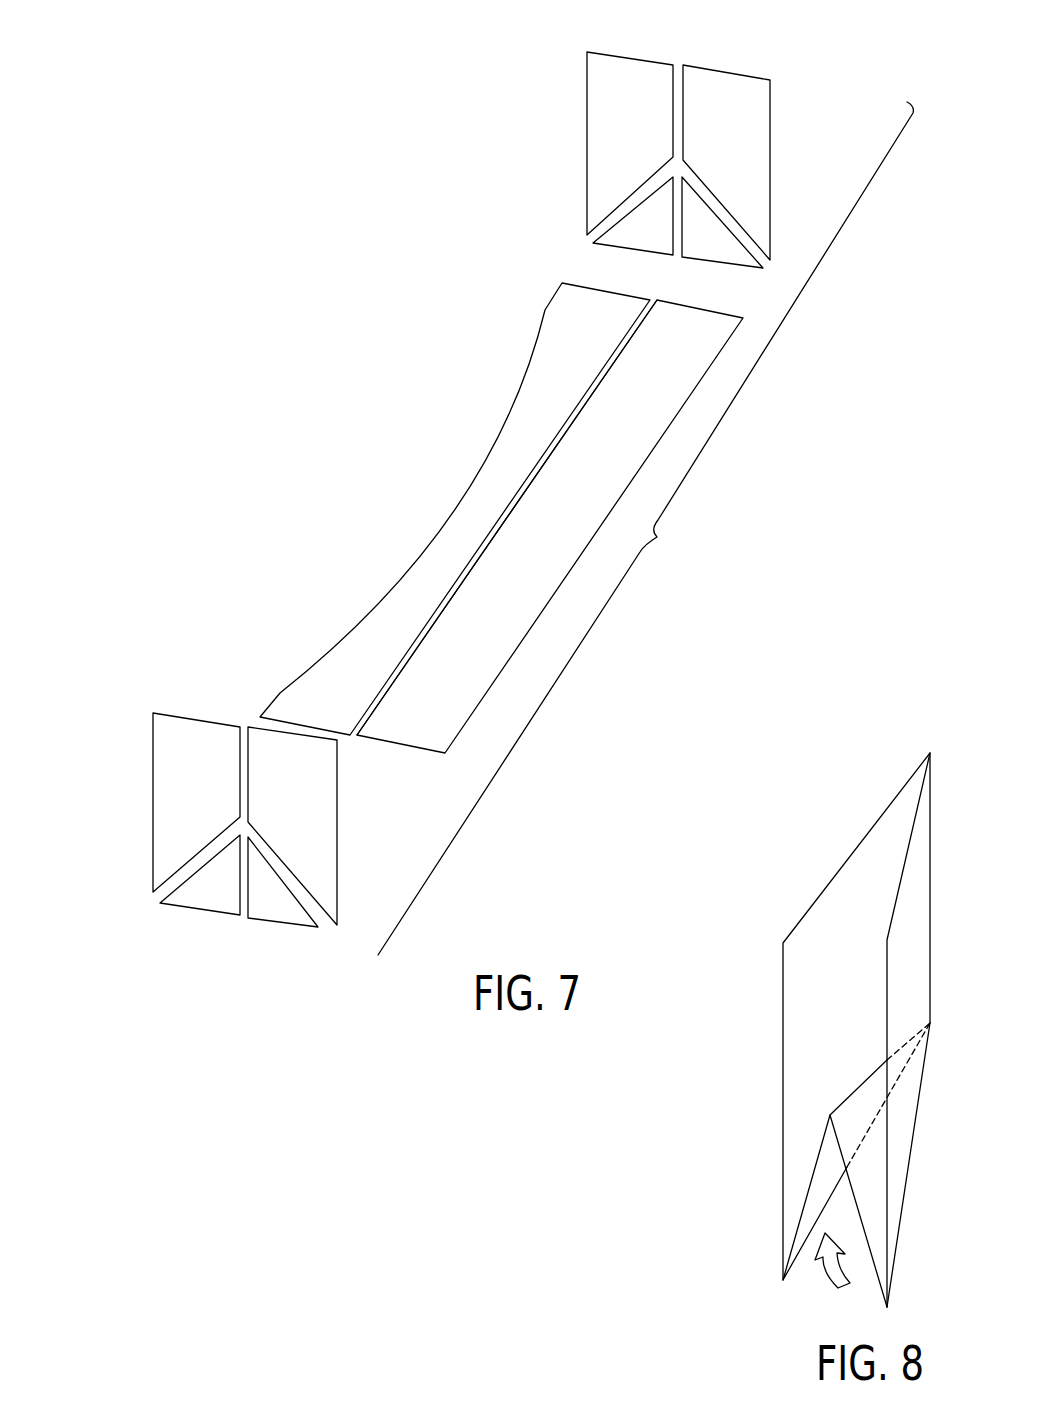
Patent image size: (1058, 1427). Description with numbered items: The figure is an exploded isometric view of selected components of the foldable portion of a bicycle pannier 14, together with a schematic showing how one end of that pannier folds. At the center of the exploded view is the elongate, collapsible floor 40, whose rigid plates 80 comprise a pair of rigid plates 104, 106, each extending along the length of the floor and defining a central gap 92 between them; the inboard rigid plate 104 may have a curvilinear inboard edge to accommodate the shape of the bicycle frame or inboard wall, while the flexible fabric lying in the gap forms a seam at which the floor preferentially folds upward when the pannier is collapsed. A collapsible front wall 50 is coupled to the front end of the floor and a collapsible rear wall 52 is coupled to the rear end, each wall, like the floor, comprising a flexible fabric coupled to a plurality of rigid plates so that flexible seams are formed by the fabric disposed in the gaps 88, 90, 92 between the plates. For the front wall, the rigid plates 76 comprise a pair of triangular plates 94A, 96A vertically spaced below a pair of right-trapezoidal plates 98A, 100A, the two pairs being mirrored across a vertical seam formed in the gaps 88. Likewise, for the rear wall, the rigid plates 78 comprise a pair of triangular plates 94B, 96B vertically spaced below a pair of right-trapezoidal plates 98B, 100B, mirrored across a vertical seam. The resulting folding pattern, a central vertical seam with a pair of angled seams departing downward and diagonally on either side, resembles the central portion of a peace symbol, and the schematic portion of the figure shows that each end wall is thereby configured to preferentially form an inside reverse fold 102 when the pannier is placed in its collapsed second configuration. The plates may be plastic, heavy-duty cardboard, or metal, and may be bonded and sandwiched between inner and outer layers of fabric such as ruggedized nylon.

In FIG. 7, the pannier 14 is at (645, 528).
In FIG. 7, the floor 40 is at (340, 383).
In FIG. 7, the front wall 50 is at (532, 190).
In FIG. 7, the rear wall 52 is at (138, 790).
In FIG. 8, the rear wall 52 is at (730, 1013).
In FIG. 7, the rigid plates 76 is at (555, 120).
In FIG. 7, the rigid plates 78 is at (400, 492).
In FIG. 7, the rigid plates 80 is at (145, 938).
In FIG. 7, the gaps 88 is at (635, 197).
In FIG. 7, the gaps 90 is at (470, 567).
In FIG. 7, the gaps 92 is at (278, 865).
In FIG. 7, the triangular plate 94A is at (642, 230).
In FIG. 7, the triangular plate 94B is at (187, 902).
In FIG. 7, the triangular plate 96A is at (707, 238).
In FIG. 7, the triangular plate 96B is at (283, 912).
In FIG. 7, the right-trapezoidal plate 98A is at (632, 73).
In FIG. 7, the right-trapezoidal plate 98B is at (195, 735).
In FIG. 7, the right-trapezoidal plate 100A is at (723, 88).
In FIG. 7, the right-trapezoidal plate 100B is at (288, 750).
In FIG. 8, the inside reverse fold 102 is at (795, 1168).
In FIG. 7, the inboard rigid plate 104 is at (510, 435).
In FIG. 7, the rigid plate 106 is at (634, 443).